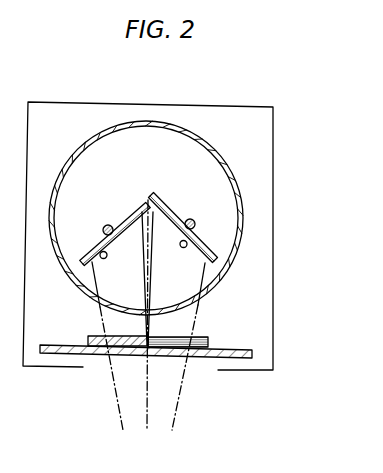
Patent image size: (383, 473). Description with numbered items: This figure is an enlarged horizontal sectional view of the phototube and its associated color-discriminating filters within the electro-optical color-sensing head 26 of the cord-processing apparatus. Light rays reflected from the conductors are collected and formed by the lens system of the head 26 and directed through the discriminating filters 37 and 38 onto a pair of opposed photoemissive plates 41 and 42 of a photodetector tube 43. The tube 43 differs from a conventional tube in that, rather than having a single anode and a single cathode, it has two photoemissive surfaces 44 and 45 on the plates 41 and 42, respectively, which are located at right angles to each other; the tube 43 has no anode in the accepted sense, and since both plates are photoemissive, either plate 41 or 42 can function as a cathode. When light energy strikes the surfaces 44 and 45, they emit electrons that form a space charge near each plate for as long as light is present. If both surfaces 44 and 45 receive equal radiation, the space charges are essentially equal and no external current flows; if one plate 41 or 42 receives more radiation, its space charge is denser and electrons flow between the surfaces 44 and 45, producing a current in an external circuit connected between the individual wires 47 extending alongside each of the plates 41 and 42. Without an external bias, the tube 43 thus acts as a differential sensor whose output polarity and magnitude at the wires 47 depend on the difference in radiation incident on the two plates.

The electro-optical color-sensing head 26 is at (280, 159).
The discriminating filter 37 is at (122, 357).
The discriminating filter 38 is at (172, 358).
The photoemissive plate 41 is at (139, 212).
The photoemissive plate 42 is at (160, 200).
The photodetector tube 43 is at (208, 140).
The photoemissive surface 44 is at (101, 254).
The photoemissive surface 45 is at (187, 247).
The wire 47 is at (108, 224).